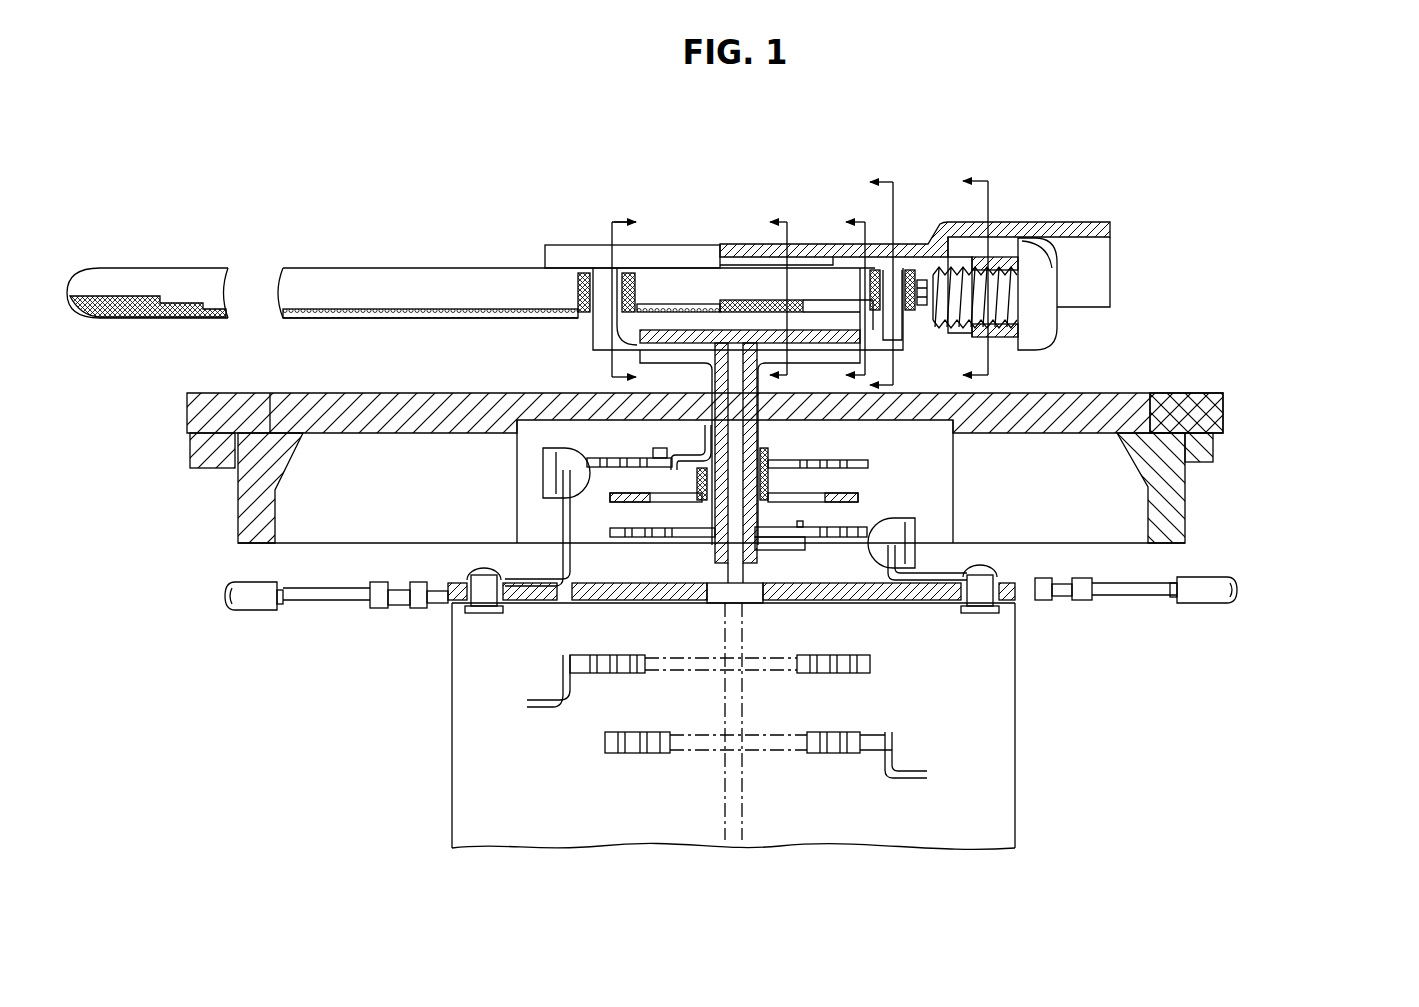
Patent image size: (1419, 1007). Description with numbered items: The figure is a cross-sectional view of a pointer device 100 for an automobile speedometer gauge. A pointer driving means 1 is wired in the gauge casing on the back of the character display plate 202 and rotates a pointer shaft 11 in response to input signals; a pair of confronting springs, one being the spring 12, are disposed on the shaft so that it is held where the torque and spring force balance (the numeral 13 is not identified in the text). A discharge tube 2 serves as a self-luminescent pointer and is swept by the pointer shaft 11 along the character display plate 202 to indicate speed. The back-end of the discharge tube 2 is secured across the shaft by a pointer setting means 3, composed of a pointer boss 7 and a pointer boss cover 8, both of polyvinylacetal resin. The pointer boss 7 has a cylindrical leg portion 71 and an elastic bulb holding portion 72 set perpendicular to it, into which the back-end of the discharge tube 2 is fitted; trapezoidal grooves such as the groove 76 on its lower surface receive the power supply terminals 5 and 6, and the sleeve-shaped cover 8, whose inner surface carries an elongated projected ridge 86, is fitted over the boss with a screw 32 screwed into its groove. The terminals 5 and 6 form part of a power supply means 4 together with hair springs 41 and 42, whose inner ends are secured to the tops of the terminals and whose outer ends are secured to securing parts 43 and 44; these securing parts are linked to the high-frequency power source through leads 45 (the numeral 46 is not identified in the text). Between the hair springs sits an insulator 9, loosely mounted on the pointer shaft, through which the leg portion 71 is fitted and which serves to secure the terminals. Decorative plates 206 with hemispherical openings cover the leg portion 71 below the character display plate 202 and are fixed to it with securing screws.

The pointer device 100 is at (1310, 221).
The pointer driving means 1 is at (752, 737).
The discharge tube 2 is at (386, 263).
The pointer setting means 3 is at (1092, 369).
The power supply means 4 is at (421, 618).
The power supply terminal 5 is at (717, 468).
The power supply terminal 6 is at (705, 432).
The pointer boss 7 is at (728, 343).
The pointer boss cover 8 is at (1080, 222).
The insulator 9 is at (855, 507).
The pointer shaft 11 is at (738, 572).
The spring 12 is at (592, 672).
The terminal 13 is at (792, 740).
The screw 32 is at (1038, 278).
The hair spring 41 is at (827, 540).
The hair spring 42 is at (588, 545).
The securing part 43 is at (897, 547).
The securing part 44 is at (545, 487).
The lead 45 is at (1163, 598).
The lead cable 46 is at (290, 608).
The leg portion 71 is at (720, 547).
The bulb holding portion 72 is at (612, 337).
The trapezoidal groove 76 is at (667, 340).
The projected ridge 86 is at (743, 306).
The character display plate 202 is at (1206, 416).
The decorative plate 206 is at (250, 492).